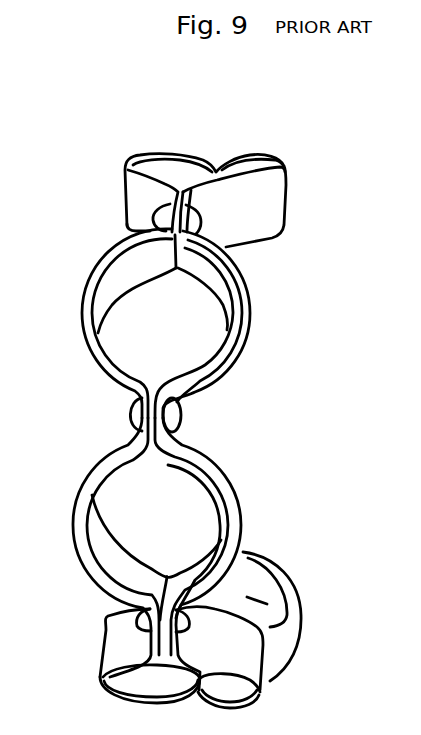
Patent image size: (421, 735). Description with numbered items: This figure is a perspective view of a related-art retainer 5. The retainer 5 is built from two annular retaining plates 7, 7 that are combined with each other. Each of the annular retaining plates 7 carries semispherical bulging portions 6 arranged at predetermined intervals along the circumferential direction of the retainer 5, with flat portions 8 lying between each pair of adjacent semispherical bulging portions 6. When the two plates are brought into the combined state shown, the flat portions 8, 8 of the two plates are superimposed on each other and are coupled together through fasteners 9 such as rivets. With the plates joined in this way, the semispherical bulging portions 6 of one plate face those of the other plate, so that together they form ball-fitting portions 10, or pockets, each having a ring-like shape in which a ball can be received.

The retainer 5 is at (294, 173).
The semispherical bulging portions 6 is at (86, 307).
The annular retaining plates 7 is at (84, 351).
The flat portions 8 is at (142, 413).
The fasteners 9 is at (175, 413).
The ball-fitting portions 10 is at (138, 298).